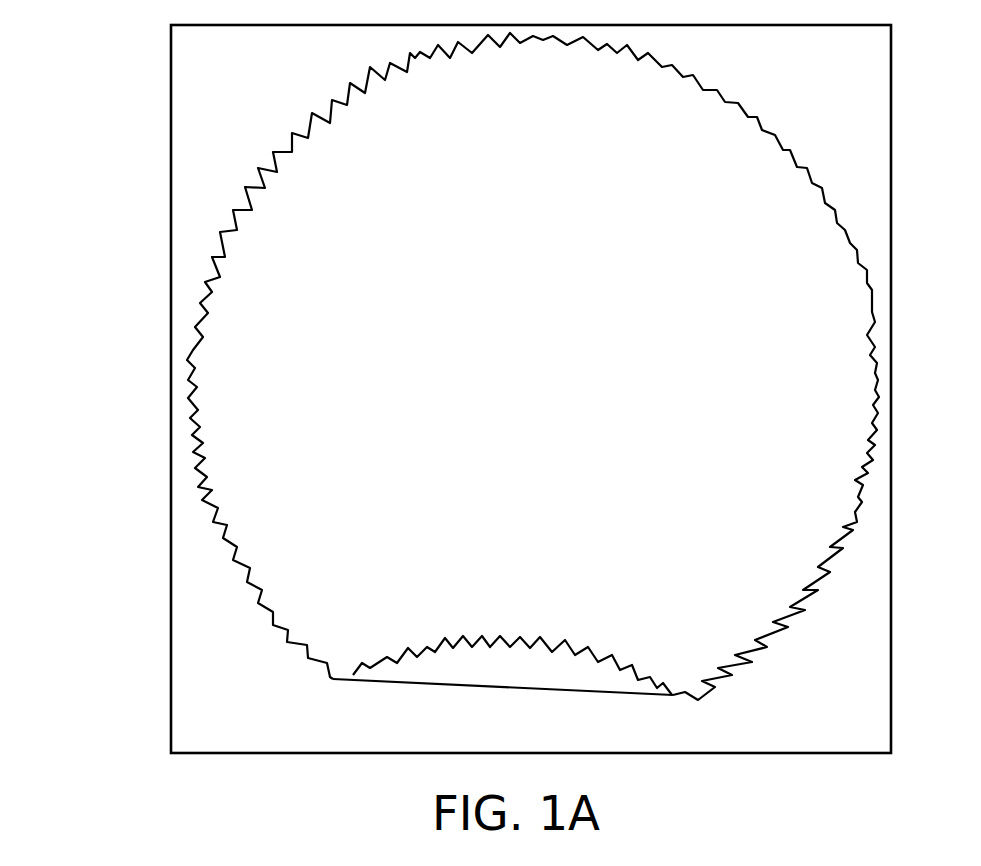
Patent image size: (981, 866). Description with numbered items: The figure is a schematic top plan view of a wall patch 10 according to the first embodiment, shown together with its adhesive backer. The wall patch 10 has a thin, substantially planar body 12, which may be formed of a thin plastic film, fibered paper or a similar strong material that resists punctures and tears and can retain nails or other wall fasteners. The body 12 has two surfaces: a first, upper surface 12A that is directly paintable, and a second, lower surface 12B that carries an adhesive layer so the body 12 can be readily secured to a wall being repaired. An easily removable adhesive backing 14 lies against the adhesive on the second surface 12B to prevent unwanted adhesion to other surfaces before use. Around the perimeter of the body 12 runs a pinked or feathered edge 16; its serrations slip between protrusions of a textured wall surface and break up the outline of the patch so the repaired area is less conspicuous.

The wall patch 10 is at (140, 110).
The body 12 is at (760, 115).
The first, upper surface 12A is at (540, 372).
The second, lower surface 12B is at (525, 668).
The adhesive backing 14 is at (831, 725).
The feathered edge 16 is at (286, 630).